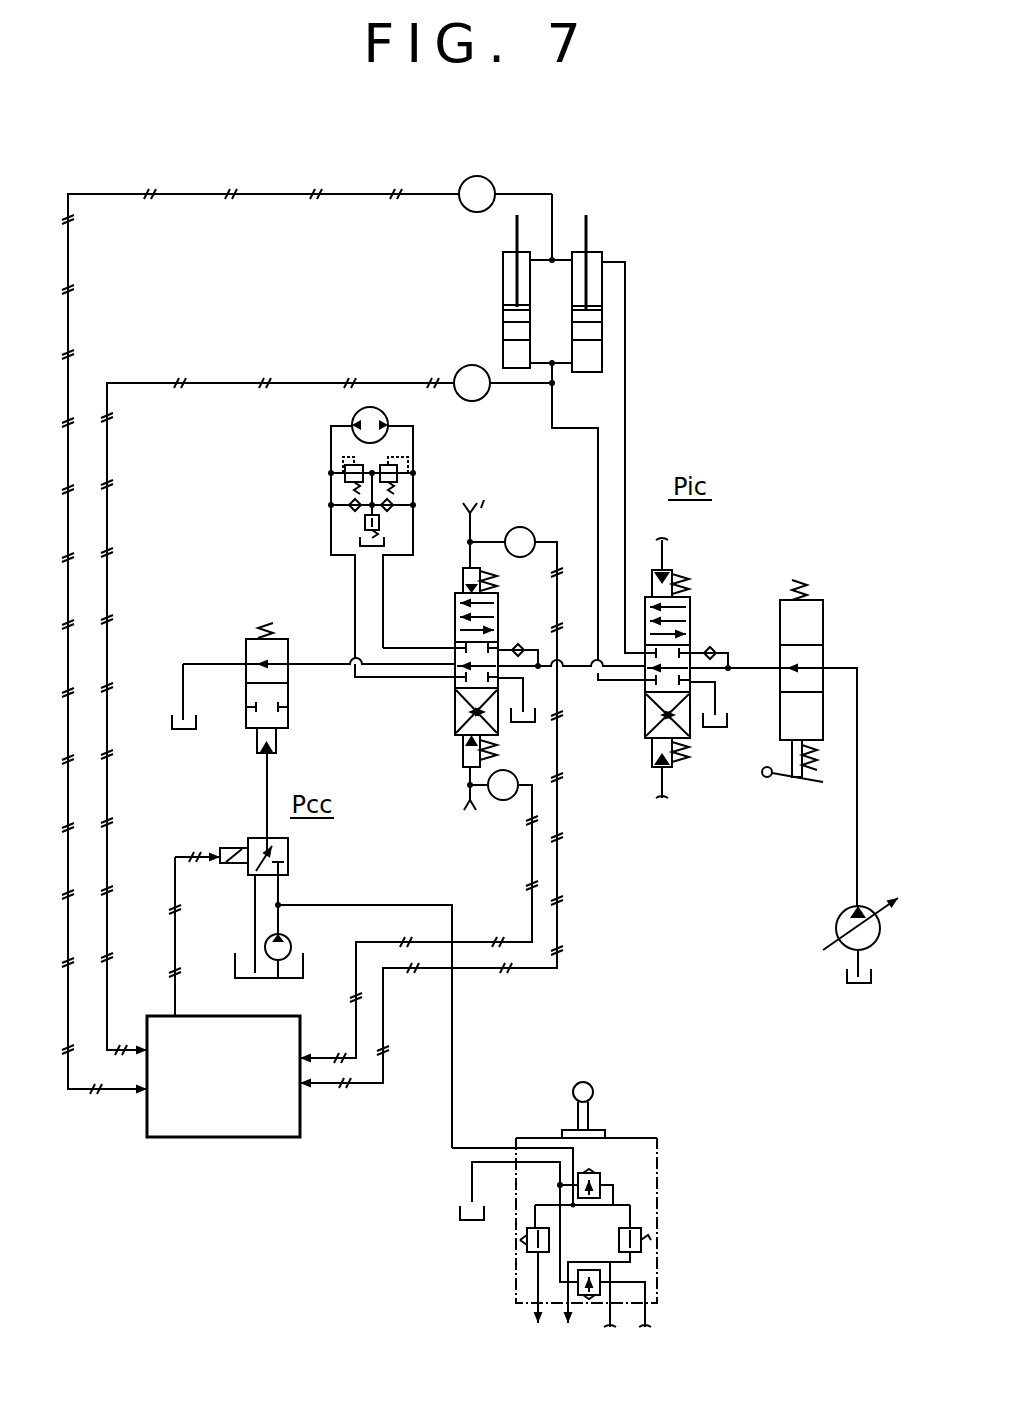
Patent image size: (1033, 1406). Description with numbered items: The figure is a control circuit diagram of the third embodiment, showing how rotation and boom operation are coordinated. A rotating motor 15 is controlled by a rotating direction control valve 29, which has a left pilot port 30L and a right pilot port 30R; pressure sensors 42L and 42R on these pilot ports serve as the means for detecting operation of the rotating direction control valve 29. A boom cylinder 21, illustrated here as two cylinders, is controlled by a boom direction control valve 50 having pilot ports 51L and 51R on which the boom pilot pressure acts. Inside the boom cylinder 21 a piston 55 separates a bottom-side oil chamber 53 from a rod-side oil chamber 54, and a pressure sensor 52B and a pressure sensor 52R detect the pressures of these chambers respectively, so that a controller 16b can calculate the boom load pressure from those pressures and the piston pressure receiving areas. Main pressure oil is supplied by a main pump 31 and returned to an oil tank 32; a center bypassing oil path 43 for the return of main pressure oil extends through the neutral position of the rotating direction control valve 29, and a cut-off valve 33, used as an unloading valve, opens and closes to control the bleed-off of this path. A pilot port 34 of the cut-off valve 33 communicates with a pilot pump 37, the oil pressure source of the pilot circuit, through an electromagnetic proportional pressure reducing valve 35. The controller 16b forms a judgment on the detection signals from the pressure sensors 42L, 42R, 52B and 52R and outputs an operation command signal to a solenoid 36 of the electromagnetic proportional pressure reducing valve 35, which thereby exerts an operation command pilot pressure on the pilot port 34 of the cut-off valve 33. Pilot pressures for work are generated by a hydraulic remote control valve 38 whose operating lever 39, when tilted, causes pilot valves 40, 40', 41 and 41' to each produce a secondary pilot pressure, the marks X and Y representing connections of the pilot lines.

The pressure sensor 52R is at (466, 182).
The pressure sensor 52B is at (482, 400).
The boom cylinder 21 is at (602, 257).
The rod-side oil chamber 54 is at (578, 277).
The piston 55 is at (578, 313).
The bottom-side oil chamber 53 is at (578, 339).
The rotating motor 15 is at (352, 415).
The rotating direction control valve 29 is at (455, 600).
The center bypassing oil path 43 is at (455, 688).
The right pilot port 30R is at (463, 570).
The left pilot port 30L is at (463, 767).
The pressure sensor 42R is at (530, 528).
The pressure sensor 42L is at (503, 803).
The boom direction control valve 50 is at (690, 600).
The pilot port 51R is at (672, 570).
The pilot port 51L is at (672, 767).
The main pump 31 is at (846, 910).
The cut-off valve 33 is at (288, 725).
The pilot port 34 is at (276, 748).
The oil tank 32 is at (188, 730).
The electromagnetic proportional pressure reducing valve 35 is at (250, 838).
The solenoid 36 is at (220, 848).
The pilot pump 37 is at (292, 944).
The controller 16b is at (212, 1140).
The hydraulic remote control valve 38 is at (625, 1122).
The operating lever 39 is at (573, 1088).
The pilot valve 40 is at (503, 1294).
The pilot valve 40' is at (641, 1282).
The pilot valve 41 is at (614, 1320).
The pilot valve 41' is at (647, 1182).